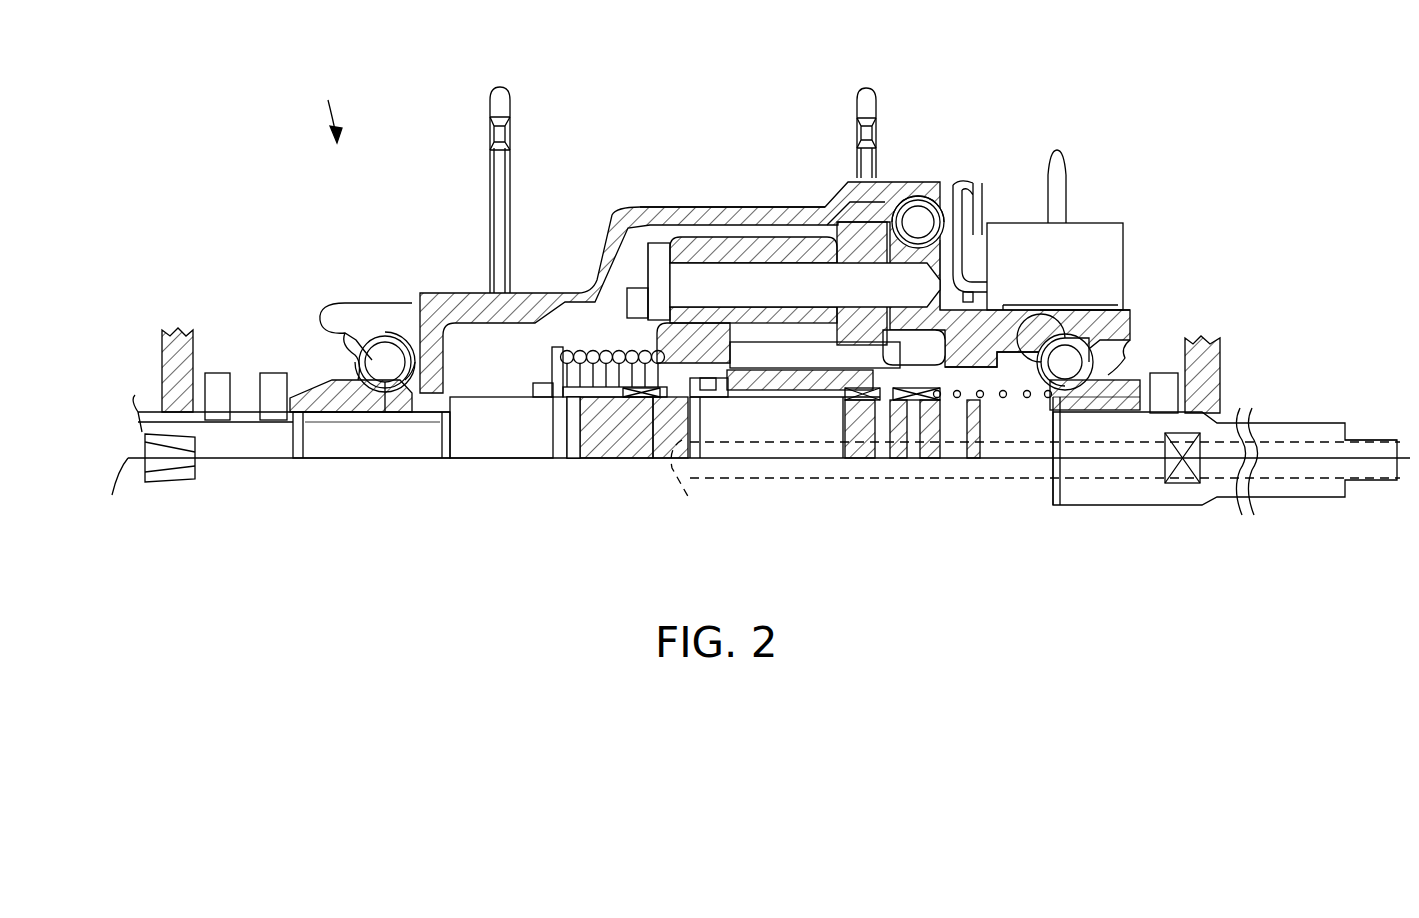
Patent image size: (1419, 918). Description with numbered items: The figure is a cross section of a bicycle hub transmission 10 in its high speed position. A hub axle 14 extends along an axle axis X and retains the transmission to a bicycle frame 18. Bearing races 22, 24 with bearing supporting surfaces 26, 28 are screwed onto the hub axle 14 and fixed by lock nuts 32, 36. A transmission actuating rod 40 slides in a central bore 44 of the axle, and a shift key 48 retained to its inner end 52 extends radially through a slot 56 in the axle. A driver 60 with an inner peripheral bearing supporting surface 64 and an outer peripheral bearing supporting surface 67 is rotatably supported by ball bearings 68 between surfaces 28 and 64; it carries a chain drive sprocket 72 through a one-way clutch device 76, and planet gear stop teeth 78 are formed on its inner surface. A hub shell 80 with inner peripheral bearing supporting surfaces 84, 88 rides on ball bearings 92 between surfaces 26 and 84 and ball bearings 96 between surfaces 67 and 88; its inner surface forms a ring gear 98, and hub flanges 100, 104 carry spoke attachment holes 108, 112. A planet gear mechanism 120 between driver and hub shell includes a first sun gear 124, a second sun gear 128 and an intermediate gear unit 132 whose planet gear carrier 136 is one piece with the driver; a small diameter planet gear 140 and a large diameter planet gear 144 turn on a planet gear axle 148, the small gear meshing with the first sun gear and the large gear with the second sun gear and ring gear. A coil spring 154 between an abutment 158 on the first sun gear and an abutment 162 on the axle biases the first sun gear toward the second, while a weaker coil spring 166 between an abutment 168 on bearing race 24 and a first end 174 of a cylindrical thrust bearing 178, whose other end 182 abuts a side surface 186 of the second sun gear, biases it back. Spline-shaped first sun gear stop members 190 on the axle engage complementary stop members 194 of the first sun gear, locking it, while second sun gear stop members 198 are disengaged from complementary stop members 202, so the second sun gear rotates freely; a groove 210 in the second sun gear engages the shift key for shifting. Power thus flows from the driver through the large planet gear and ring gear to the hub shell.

The bicycle hub transmission 10 is at (325, 108).
The hub axle 14 is at (358, 460).
The bicycle frame 18 is at (162, 360).
The bearing race 22 is at (338, 404).
The bearing race 24 is at (1162, 400).
The bearing supporting surface 26 is at (385, 388).
The bearing supporting surface 28 is at (1063, 380).
The lock nut 32 is at (278, 405).
The lock nut 36 is at (1195, 412).
The transmission actuating rod 40 is at (1362, 482).
The central bore 44 is at (1262, 478).
The shift key 48 is at (716, 430).
The inner end 52 is at (687, 484).
The slot 56 is at (1045, 437).
The driver 60 is at (1112, 330).
The inner peripheral bearing supporting surface 64 is at (1082, 360).
The outer peripheral bearing supporting surface 67 is at (962, 198).
The ball bearings 68 is at (1075, 378).
The chain drive sprocket 72 is at (1067, 175).
The one-way clutch device 76 is at (1055, 266).
The planet gear stop teeth 78 is at (990, 370).
The hub shell 80 is at (608, 232).
The inner peripheral bearing supporting surface 84 is at (386, 362).
The inner peripheral bearing supporting surface 88 is at (920, 205).
The ball bearings 92 is at (372, 360).
The ball bearings 96 is at (936, 212).
The ring gear 98 is at (838, 210).
The hub flange 100 is at (500, 87).
The hub flange 104 is at (866, 88).
The spoke attachment holes 108 is at (490, 132).
The spoke attachment holes 112 is at (857, 140).
The planet gear mechanism 120 is at (636, 262).
The first sun gear 124 is at (692, 330).
The second sun gear 128 is at (810, 380).
The intermediate gear unit 132 is at (719, 222).
The planet gear carrier 136 is at (950, 262).
The small diameter planet gear 140 is at (700, 255).
The large diameter planet gear 144 is at (868, 250).
The planet gear axle 148 is at (805, 285).
The coil spring 154 is at (585, 352).
The abutment 158 is at (620, 382).
The abutment 162 is at (553, 372).
The coil spring 166 is at (975, 400).
The abutment 168 is at (1045, 398).
The first end 174 is at (950, 398).
The cylindrical thrust bearing 178 is at (928, 400).
The other end 182 is at (898, 392).
The side surface 186 is at (882, 395).
The first sun gear stop members 190 is at (578, 400).
The complementary stop members 194 is at (645, 397).
The second sun gear stop members 198 is at (905, 400).
The complementary stop members 202 is at (852, 400).
The groove 210 is at (738, 383).
The axle axis X is at (756, 490).